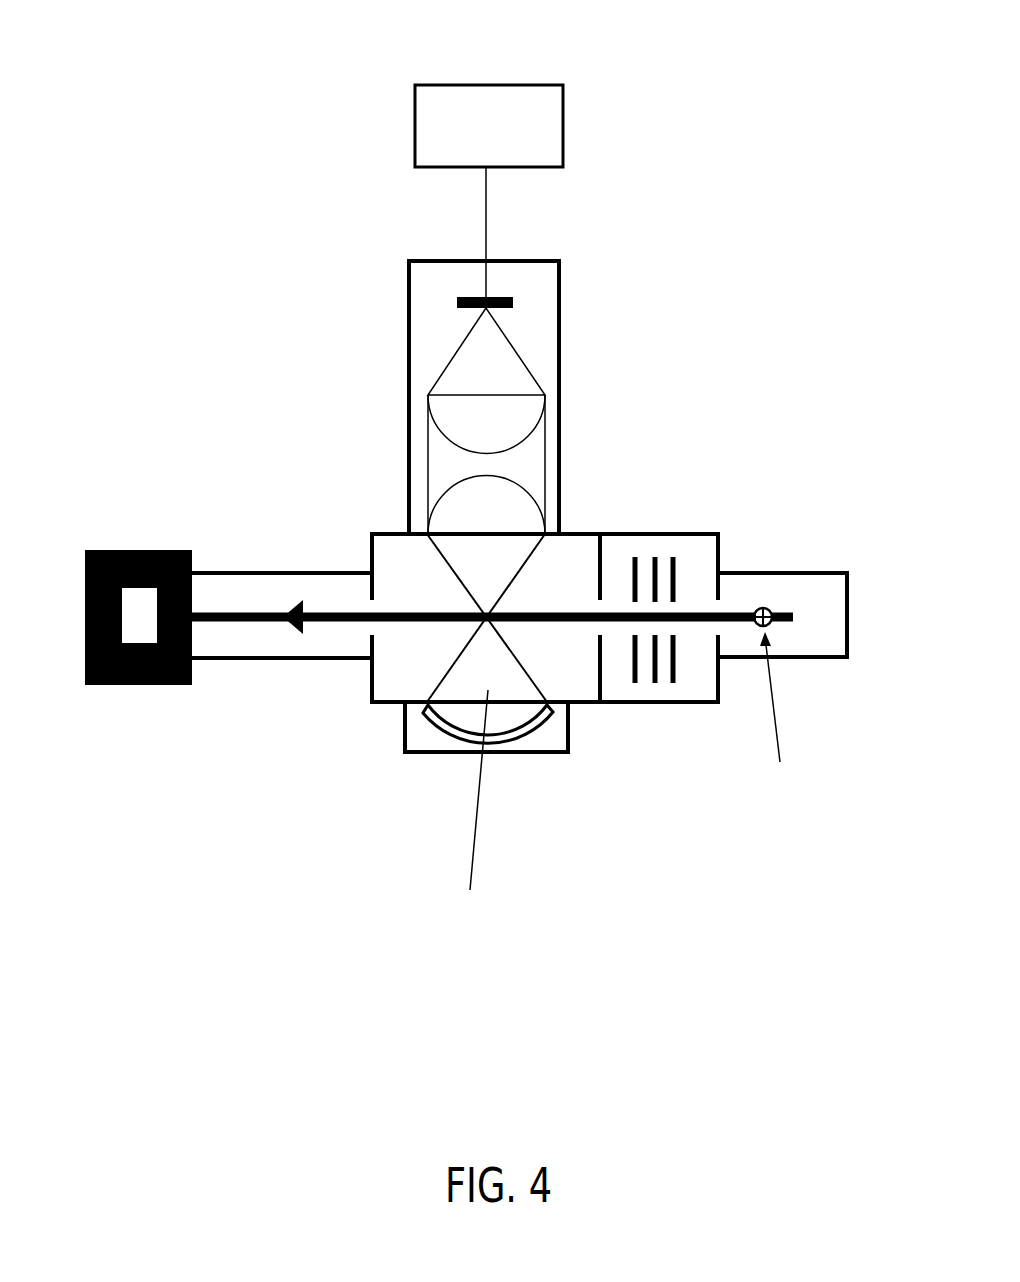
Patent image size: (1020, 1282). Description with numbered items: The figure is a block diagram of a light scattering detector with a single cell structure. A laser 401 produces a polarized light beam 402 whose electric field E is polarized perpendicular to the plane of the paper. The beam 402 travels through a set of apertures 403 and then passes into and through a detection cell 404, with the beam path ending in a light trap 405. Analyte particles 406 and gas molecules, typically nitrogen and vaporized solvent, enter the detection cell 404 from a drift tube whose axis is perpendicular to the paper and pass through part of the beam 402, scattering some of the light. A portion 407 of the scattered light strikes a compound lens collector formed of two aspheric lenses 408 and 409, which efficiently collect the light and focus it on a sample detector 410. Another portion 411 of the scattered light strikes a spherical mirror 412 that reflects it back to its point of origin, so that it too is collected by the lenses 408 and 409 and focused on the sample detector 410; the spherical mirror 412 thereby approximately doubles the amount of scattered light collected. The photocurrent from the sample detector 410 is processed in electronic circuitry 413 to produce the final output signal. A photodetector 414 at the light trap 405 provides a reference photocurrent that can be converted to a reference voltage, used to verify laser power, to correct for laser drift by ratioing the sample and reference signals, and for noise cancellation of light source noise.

The laser 401 is at (828, 658).
The polarized light beam 402 is at (790, 617).
The set of apertures 403 is at (658, 563).
The detection cell 404 is at (570, 705).
The light trap 405 is at (247, 662).
The analyte particles 406 is at (487, 622).
The portion of scattered light 407 is at (503, 573).
The aspheric lens 408 is at (452, 517).
The aspheric lens 409 is at (445, 413).
The sample detector 410 is at (510, 300).
The another portion of scattered light 411 is at (468, 811).
The spherical mirror 412 is at (513, 730).
The electronic circuitry 413 is at (523, 118).
The photodetector 414 is at (138, 612).
The electric field E is at (776, 723).